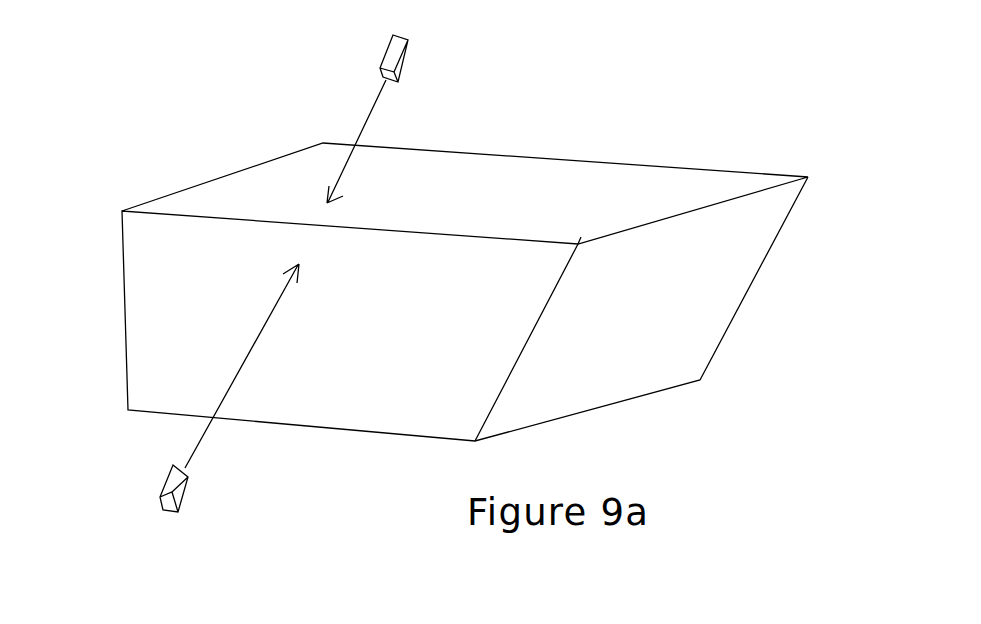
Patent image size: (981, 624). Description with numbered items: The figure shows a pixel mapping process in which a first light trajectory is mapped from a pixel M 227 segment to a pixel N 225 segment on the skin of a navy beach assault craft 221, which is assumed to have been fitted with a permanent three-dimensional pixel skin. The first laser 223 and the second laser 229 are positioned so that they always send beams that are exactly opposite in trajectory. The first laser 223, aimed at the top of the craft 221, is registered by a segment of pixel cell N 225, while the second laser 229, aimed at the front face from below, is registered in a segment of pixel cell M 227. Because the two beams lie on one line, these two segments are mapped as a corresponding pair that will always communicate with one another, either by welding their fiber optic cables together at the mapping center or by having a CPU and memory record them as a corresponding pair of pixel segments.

The navy beach assault craft 221 is at (127, 372).
The Laser 1 223 is at (408, 65).
The pixel "N" segment 225 is at (307, 197).
The pixel "M" segment 227 is at (298, 262).
The Laser 2 229 is at (167, 472).